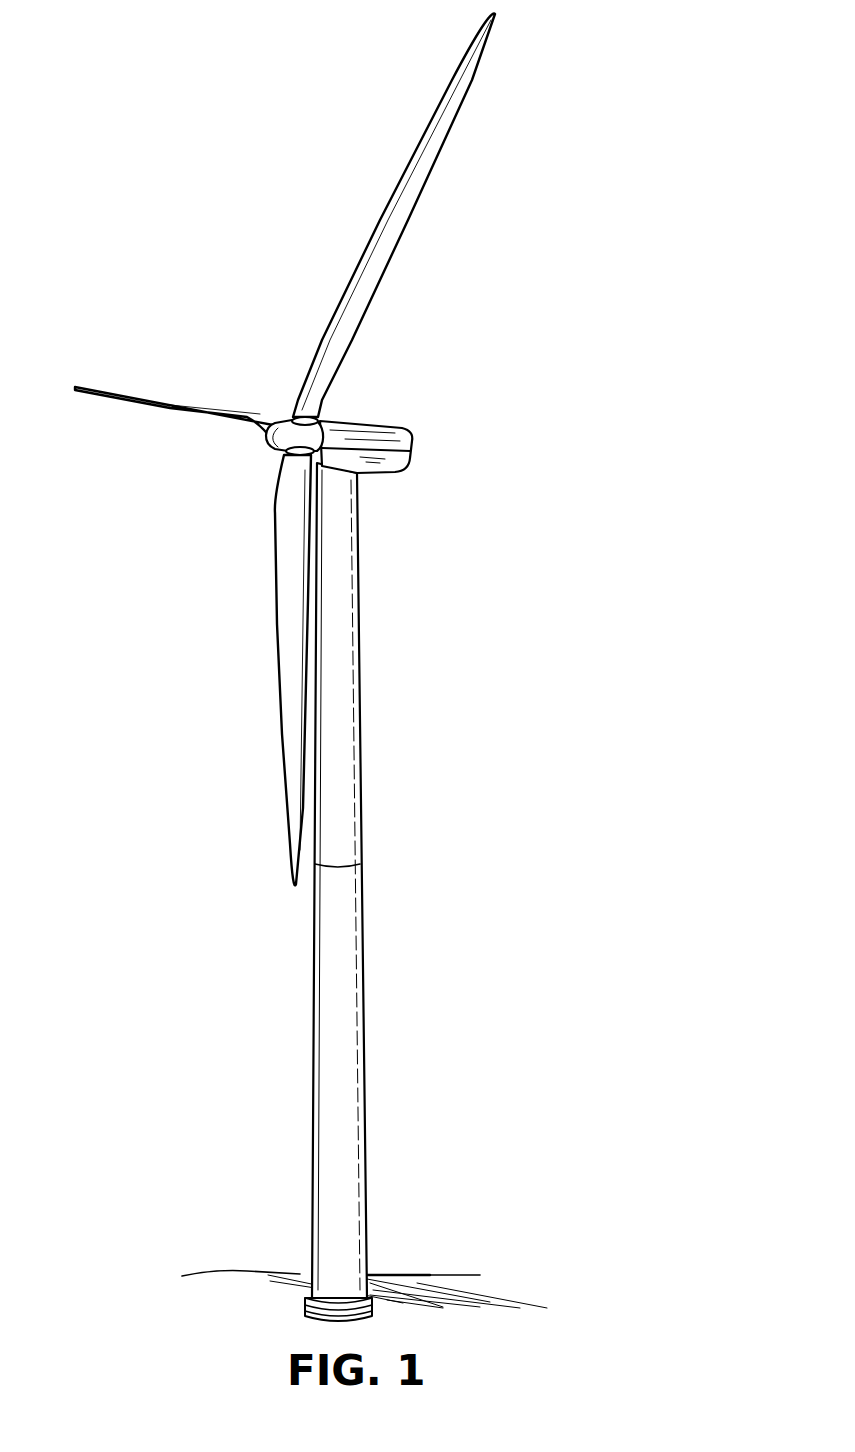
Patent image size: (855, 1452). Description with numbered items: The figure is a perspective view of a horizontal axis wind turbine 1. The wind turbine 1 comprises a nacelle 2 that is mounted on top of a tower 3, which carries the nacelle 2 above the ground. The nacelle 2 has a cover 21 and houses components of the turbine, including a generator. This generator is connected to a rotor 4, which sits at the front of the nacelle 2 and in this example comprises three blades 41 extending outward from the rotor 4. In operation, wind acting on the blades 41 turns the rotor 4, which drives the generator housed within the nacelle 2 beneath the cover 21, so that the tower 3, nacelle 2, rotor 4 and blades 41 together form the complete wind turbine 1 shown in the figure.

The horizontal axis wind turbine 1 is at (179, 204).
The nacelle 2 is at (412, 437).
The cover 21 is at (375, 461).
The tower 3 is at (356, 762).
The rotor 4 is at (264, 446).
The blades 41 is at (420, 185).